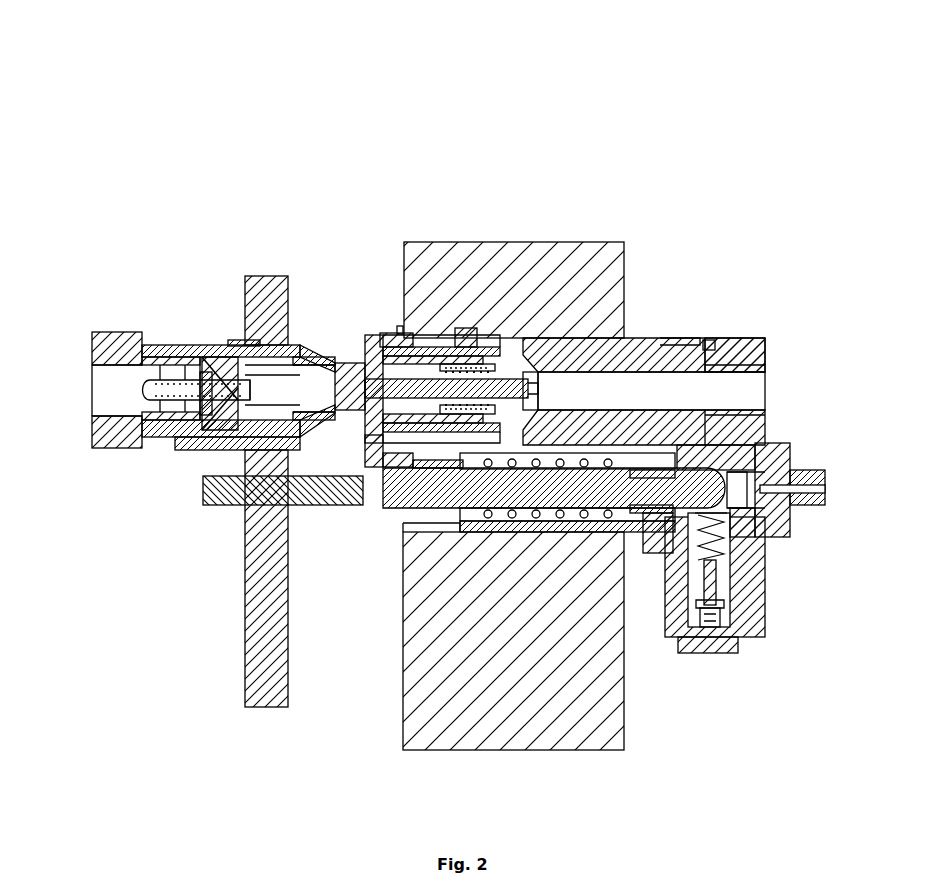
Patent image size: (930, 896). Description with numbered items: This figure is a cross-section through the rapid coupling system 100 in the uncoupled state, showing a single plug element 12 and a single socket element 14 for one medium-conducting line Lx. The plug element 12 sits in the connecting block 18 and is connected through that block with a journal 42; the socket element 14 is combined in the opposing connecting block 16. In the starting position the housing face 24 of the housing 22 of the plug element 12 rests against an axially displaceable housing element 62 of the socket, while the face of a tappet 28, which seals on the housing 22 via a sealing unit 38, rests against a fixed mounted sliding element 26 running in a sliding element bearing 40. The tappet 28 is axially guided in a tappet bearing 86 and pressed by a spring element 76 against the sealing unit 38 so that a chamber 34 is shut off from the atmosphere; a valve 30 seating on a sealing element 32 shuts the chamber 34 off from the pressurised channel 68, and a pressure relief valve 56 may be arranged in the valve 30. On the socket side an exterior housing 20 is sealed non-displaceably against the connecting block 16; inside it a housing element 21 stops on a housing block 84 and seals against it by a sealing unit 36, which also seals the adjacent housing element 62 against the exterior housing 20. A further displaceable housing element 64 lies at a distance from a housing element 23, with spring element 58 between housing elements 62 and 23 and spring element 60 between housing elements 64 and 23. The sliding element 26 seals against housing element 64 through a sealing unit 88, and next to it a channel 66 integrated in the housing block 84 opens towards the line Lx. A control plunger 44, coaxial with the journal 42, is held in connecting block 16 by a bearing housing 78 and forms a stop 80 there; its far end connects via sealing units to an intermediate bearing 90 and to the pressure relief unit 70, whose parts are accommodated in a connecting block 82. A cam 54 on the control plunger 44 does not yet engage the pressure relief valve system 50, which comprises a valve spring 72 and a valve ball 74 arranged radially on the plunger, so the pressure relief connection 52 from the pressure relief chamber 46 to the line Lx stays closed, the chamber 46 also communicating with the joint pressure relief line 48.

The rapid coupling system 100 is at (317, 100).
The plug element 12 is at (213, 192).
The socket element 14 is at (553, 172).
The connecting block 16 is at (503, 264).
The connecting block 18 is at (270, 278).
The exterior housing 20 is at (395, 345).
The housing element 21 is at (461, 330).
The housing 22 is at (330, 363).
The housing element 23 is at (528, 380).
The housing face 24 is at (362, 468).
The sliding element 26 is at (450, 518).
The tappet 28 is at (232, 355).
The valve 30 is at (172, 344).
The sealing element 32 is at (204, 346).
The chamber 34 is at (215, 440).
The sealing unit 36 is at (560, 340).
The sealing unit 38 is at (343, 350).
The sliding element bearing 40 is at (633, 338).
The journal 42 is at (326, 508).
The control plunger 44 is at (540, 532).
The pressure relief chamber 46 is at (772, 494).
The pressure relief line 48 is at (812, 494).
The pressure relief valve system 50 is at (745, 579).
The pressure relief connection 52 is at (737, 440).
The cam 54 is at (700, 583).
The pressure relief valve 56 is at (164, 434).
The spring element 58 is at (518, 368).
The spring element 60 is at (515, 362).
The housing element 62 is at (398, 516).
The housing element 64 is at (372, 348).
The channel 66 is at (700, 343).
The pressurised channel 68 is at (108, 396).
The pressure relief unit 70 is at (748, 678).
The valve spring 72 is at (718, 650).
The valve ball 74 is at (735, 546).
The spring element 76 is at (250, 462).
The bearing housing 78 is at (568, 580).
The stop 80 is at (483, 534).
The connecting block 82 is at (755, 615).
The housing block 84 is at (665, 340).
The tappet bearing 86 is at (220, 352).
The sealing unit 88 is at (388, 515).
The intermediate bearing 90 is at (726, 340).
The medium-conducting line Lx is at (745, 390).